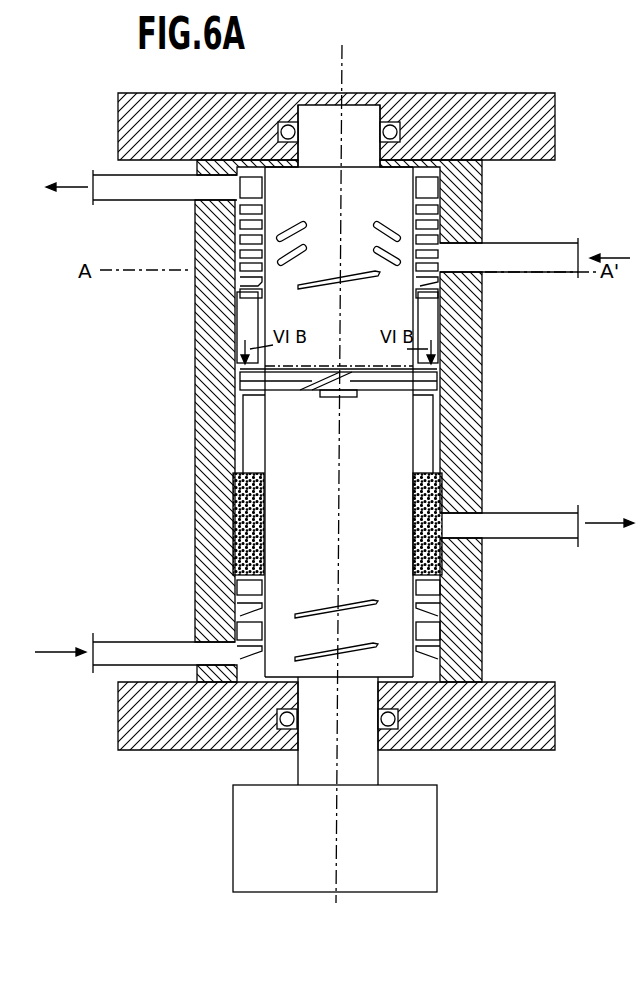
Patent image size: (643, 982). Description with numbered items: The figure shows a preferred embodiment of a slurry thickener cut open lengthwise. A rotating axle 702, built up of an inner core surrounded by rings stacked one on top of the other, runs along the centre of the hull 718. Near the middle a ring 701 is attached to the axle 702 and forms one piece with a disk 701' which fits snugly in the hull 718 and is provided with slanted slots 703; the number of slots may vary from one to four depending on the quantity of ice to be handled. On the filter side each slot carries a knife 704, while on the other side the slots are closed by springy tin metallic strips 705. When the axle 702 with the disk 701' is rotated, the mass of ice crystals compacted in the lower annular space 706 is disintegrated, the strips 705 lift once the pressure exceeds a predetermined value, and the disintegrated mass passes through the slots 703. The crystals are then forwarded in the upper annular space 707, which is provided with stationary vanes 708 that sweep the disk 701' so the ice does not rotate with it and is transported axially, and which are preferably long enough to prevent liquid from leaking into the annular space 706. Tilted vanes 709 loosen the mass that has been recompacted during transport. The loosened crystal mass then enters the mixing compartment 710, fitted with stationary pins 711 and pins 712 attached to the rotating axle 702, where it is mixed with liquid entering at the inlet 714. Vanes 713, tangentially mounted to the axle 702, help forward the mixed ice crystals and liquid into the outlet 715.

The outlet 715 is at (114, 188).
The stationary pins 711 is at (243, 267).
The pins 712 is at (428, 247).
The vanes 713 is at (448, 184).
The liquid inlet 714 is at (507, 253).
The mixing compartment 710 is at (441, 281).
The tilted vanes 709 is at (321, 288).
The stationary vanes 708 is at (247, 325).
The annular space 707 is at (422, 323).
The slanted slots 703 is at (238, 383).
The ring 701 is at (397, 368).
The disk 701' is at (418, 384).
The springy metallic strips 705 is at (358, 367).
The knife 704 is at (347, 396).
The annular space 706 is at (255, 441).
The axle 702 is at (393, 453).
The hull 718 is at (455, 607).